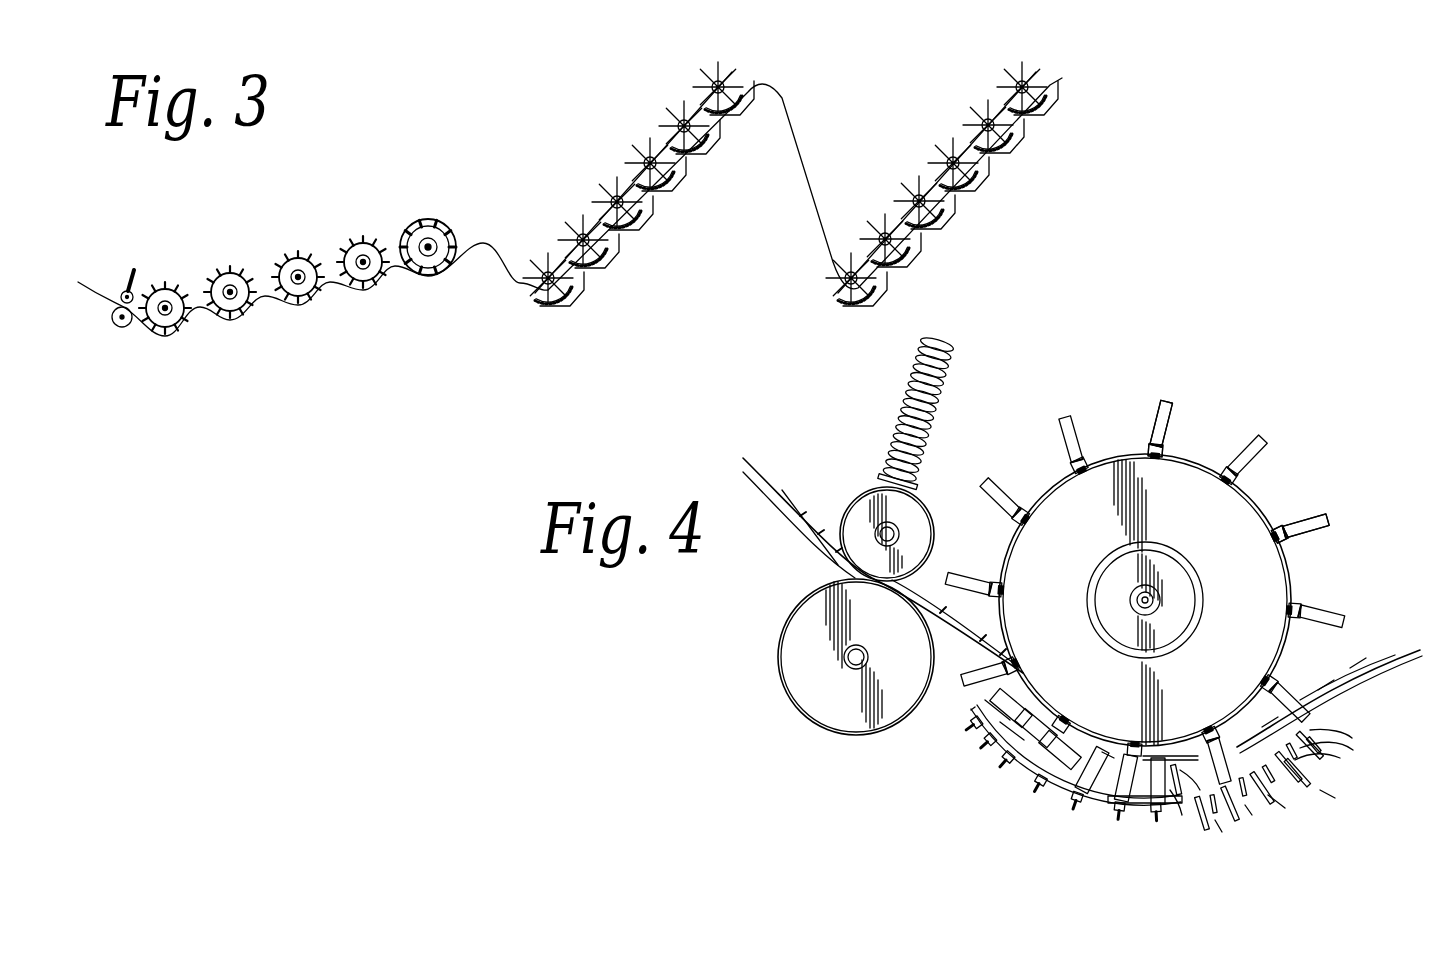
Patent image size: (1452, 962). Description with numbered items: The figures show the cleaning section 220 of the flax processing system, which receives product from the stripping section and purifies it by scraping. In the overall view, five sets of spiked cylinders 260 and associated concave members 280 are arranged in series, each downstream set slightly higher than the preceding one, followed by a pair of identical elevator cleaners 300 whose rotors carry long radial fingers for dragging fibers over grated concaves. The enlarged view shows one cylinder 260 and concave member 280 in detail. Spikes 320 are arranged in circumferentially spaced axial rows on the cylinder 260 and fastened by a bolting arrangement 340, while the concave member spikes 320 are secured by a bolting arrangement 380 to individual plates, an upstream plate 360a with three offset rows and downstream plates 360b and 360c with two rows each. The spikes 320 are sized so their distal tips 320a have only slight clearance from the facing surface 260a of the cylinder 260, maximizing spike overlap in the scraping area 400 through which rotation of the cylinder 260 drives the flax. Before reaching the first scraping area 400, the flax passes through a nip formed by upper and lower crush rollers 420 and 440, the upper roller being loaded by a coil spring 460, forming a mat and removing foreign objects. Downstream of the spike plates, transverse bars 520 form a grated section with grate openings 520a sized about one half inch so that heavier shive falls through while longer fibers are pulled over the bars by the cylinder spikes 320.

In FIG. 3, the cleaning section 220 is at (397, 147).
In FIG. 3, the cylinder 260 is at (284, 260).
In FIG. 4, the cylinder 260 is at (1187, 483).
In FIG. 3, the concave member 280 is at (288, 308).
In FIG. 4, the concave member 280 is at (920, 829).
In FIG. 3, the elevator cleaner 300 is at (624, 124).
In FIG. 3, the spike 320 is at (433, 220).
In FIG. 4, the distal tip 320a is at (1150, 438).
In FIG. 4, the bolting arrangement 340 is at (1033, 516).
In FIG. 4, the upstream plate 360a is at (975, 708).
In FIG. 4, the downstream plate 360b is at (1058, 795).
In FIG. 4, the downstream plate 360c is at (1092, 800).
In FIG. 4, the bolting arrangement 380 is at (1005, 712).
In FIG. 4, the scraping area 400 is at (1108, 782).
In FIG. 4, the upper crush roller 420 is at (868, 510).
In FIG. 4, the lower crush roller 440 is at (800, 655).
In FIG. 4, the coil spring 460 is at (962, 398).
In FIG. 4, the facing surface 260a is at (1258, 500).
In FIG. 4, the transverse bar 520 is at (1203, 832).
In FIG. 4, the grate opening 520a is at (1286, 778).